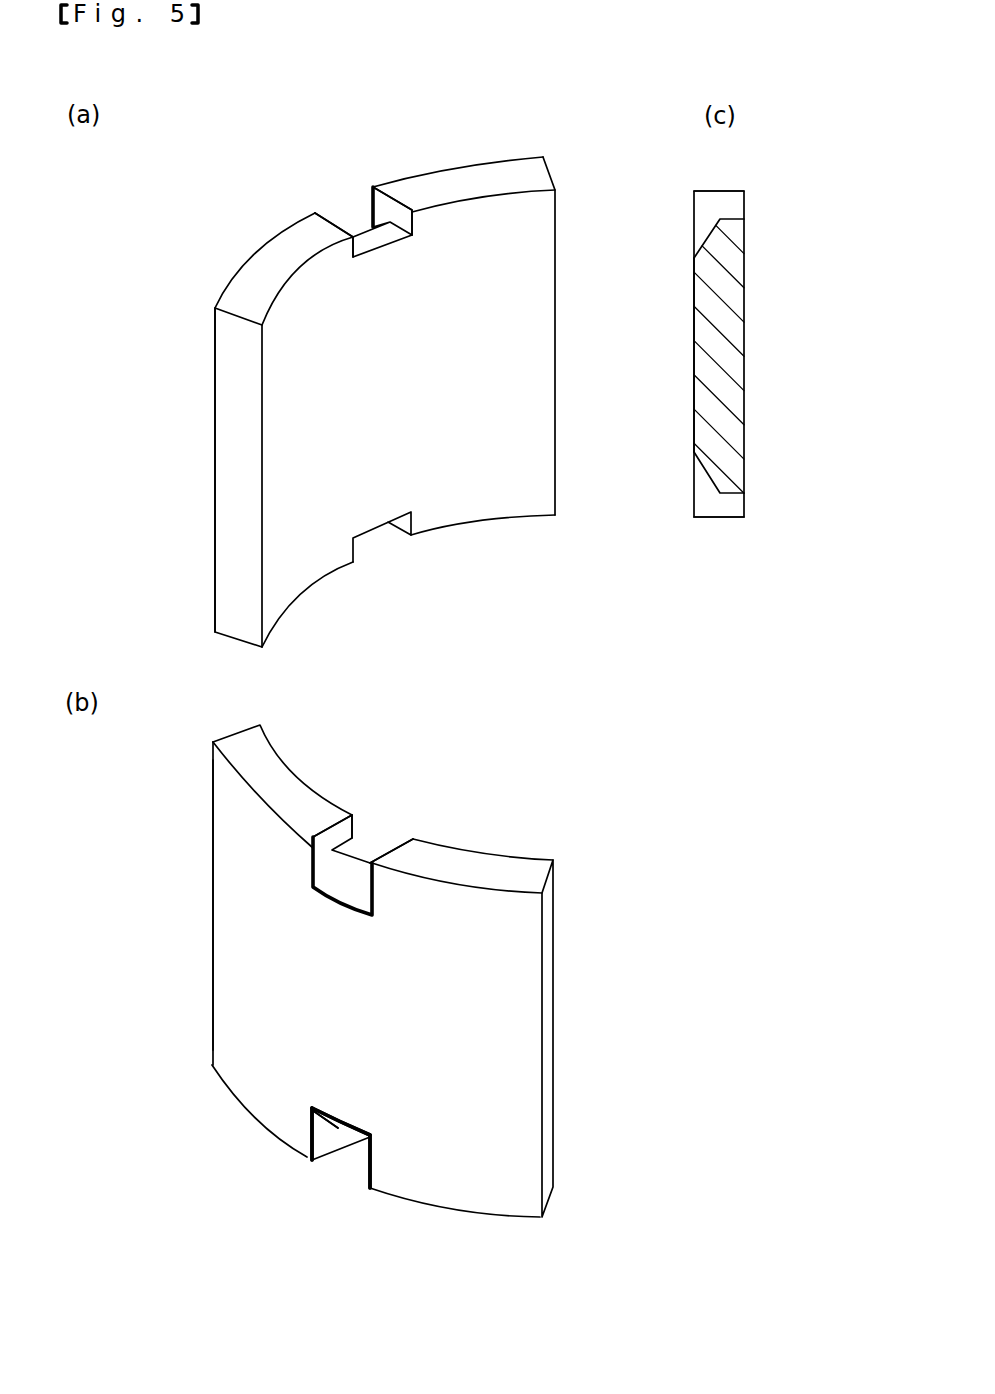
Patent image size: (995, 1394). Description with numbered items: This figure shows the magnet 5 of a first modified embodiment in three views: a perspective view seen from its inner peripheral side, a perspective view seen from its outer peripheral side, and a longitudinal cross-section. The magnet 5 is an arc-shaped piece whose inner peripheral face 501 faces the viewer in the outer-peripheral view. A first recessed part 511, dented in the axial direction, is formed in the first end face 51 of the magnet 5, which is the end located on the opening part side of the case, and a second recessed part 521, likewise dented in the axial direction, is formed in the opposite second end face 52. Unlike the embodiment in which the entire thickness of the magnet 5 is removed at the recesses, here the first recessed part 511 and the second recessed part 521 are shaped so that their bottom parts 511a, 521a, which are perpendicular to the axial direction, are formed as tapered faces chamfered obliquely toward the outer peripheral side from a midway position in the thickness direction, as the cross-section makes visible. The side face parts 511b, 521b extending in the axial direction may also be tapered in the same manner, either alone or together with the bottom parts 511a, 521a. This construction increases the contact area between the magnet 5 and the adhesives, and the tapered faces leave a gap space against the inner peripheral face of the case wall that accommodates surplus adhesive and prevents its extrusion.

The magnet 5 is at (505, 294).
The first end face 51 is at (472, 523).
The second end face 52 is at (488, 172).
The inner circumferential face of segment 501 is at (213, 390).
The first recessed part 511 is at (373, 542).
The bottom part 511a is at (337, 1128).
The side face part 511b is at (307, 1153).
The second recessed part 521 is at (354, 220).
The bottom part 521a is at (313, 898).
The side face part 521b is at (378, 202).